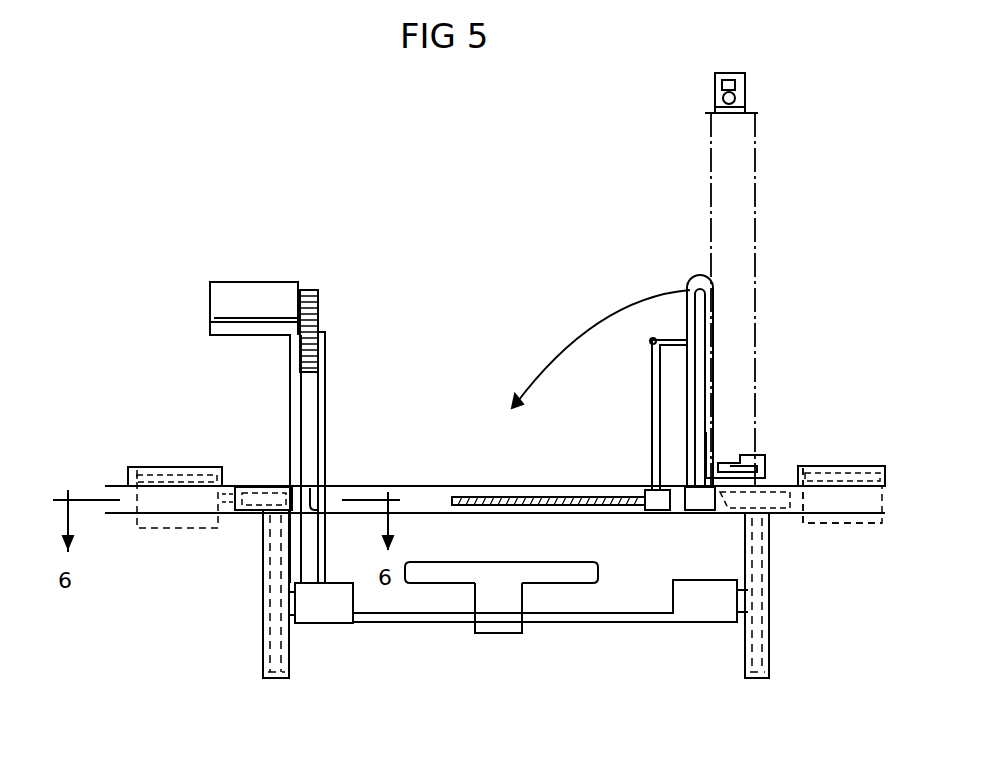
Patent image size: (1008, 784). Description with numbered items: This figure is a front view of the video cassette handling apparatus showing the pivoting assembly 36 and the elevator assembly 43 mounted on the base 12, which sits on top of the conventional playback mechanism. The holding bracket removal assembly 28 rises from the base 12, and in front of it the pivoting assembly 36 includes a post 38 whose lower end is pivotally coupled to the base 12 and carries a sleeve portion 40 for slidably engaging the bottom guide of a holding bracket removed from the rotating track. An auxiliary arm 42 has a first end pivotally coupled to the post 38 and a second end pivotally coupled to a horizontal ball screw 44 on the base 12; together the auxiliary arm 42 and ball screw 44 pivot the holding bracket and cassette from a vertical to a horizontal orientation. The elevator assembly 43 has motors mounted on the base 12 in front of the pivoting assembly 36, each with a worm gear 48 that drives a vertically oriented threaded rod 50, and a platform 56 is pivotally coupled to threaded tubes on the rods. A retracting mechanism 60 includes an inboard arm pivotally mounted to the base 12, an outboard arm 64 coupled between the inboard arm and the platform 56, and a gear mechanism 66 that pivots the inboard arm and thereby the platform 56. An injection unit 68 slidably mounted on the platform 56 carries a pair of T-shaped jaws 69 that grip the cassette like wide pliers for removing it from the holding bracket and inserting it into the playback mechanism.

The base 12 is at (885, 512).
The holding bracket removal assembly 28 is at (748, 92).
The pivoting assembly 36 is at (633, 398).
The post 38 is at (698, 275).
The sleeve portion 40 is at (770, 460).
The auxiliary arm 42 is at (652, 420).
The elevator assembly 43 is at (180, 468).
The horizontal ball screw 44 is at (480, 497).
The worm gear 48 is at (241, 487).
The threaded rods 50 is at (263, 588).
The platform 56 is at (351, 623).
The retracting mechanism 60 is at (302, 264).
The outboard arm 64 is at (325, 402).
The gear mechanism 66 is at (318, 302).
The injection unit 68 is at (521, 637).
The jaws 69 is at (492, 598).